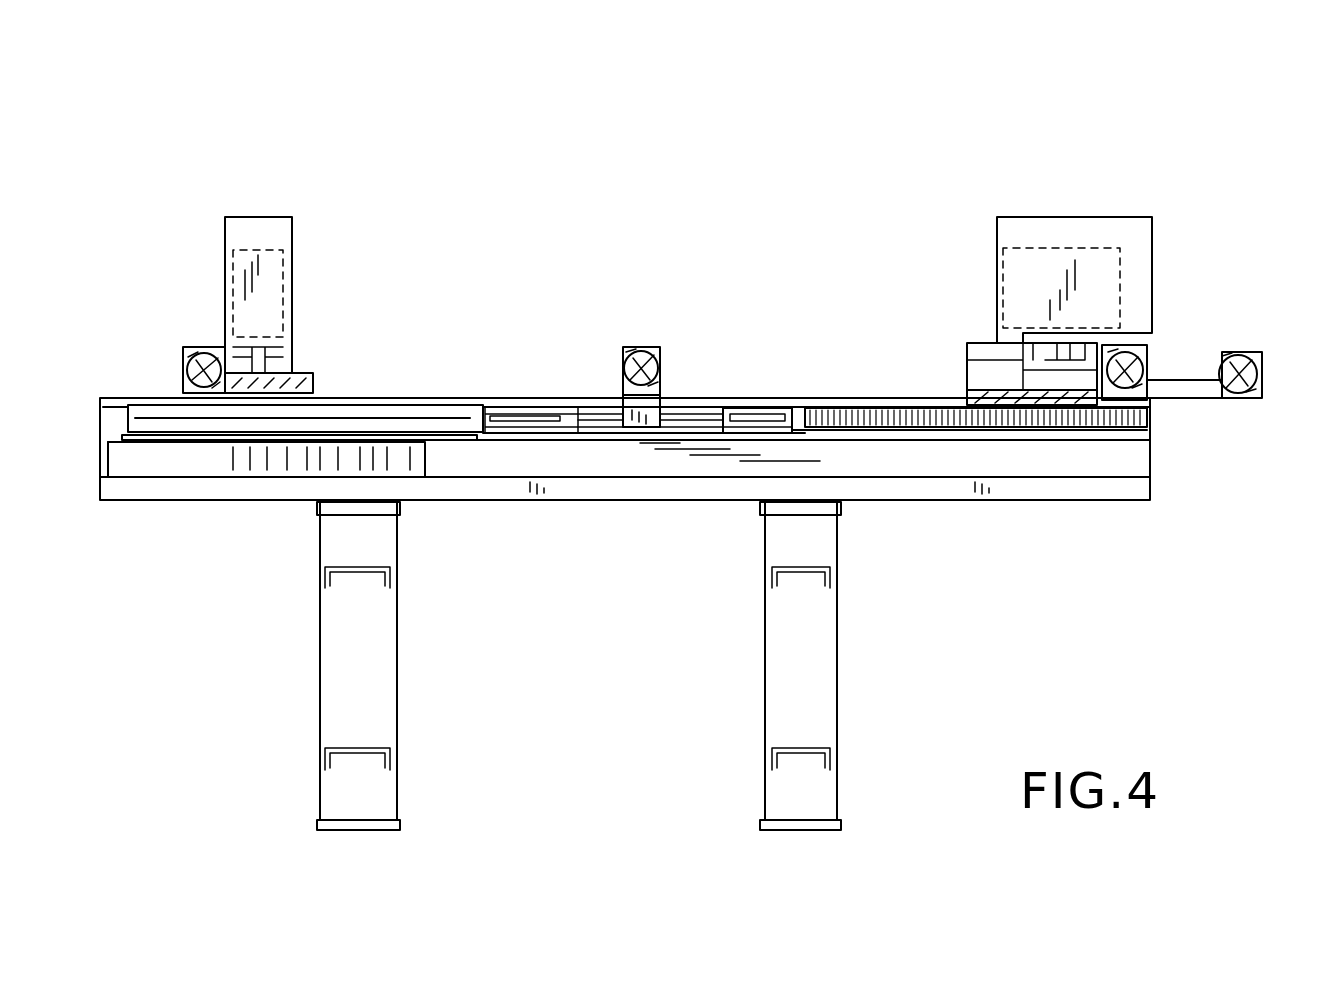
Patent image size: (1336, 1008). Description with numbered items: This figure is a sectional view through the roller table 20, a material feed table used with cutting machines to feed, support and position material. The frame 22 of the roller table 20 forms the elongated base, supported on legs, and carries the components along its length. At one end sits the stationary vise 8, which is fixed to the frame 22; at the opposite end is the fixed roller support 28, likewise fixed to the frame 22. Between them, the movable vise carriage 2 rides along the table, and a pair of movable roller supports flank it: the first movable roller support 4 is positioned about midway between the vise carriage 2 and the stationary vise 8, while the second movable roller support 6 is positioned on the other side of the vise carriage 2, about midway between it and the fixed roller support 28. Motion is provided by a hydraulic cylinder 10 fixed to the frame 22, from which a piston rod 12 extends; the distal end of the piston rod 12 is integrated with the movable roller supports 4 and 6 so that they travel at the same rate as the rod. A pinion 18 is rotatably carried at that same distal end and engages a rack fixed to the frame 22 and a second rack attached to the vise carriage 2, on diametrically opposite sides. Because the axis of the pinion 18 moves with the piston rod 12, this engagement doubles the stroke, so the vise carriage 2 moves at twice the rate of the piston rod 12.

The movable vise carriage 2 is at (1062, 220).
The first movable roller support 4 is at (625, 330).
The second movable roller support 6 is at (1158, 350).
The stationary vise 8 is at (290, 207).
The hydraulic cylinder 10 is at (340, 414).
The piston rod 12 is at (732, 416).
The pinion 18 is at (850, 425).
The roller table 20 is at (802, 222).
The frame 22 is at (317, 653).
The fixed roller support 28 is at (1240, 335).